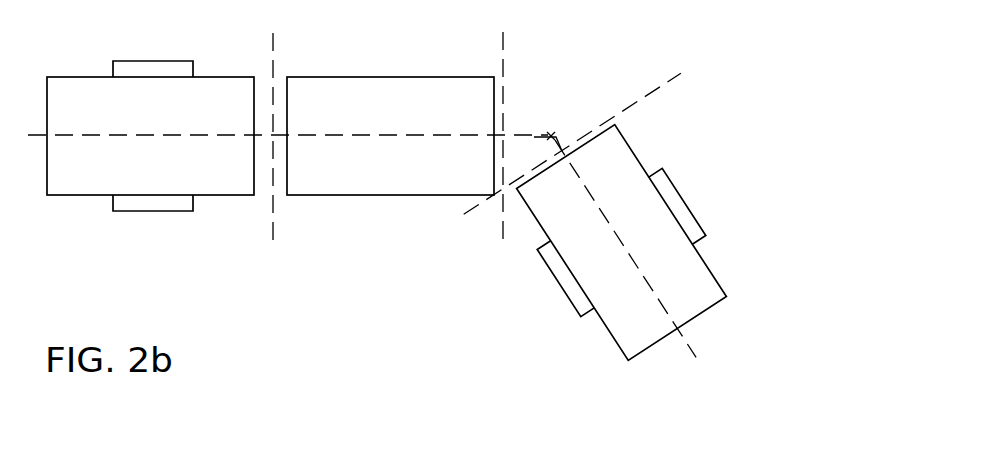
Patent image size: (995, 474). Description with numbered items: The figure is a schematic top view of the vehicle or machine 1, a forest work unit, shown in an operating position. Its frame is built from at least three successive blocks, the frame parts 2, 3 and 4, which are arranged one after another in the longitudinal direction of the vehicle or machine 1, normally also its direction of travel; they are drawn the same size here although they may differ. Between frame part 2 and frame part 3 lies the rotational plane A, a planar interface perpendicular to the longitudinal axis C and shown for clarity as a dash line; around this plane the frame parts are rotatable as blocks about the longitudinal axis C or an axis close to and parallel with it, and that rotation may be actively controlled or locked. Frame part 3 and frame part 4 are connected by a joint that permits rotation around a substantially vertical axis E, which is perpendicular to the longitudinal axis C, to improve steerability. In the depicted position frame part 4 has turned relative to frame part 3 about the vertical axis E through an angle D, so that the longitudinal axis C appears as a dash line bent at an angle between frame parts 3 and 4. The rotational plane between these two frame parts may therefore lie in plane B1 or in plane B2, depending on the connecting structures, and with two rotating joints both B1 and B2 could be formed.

The vehicle or machine 1 is at (745, 82).
The frame part 2 is at (150, 100).
The frame part 3 is at (412, 100).
The frame part 4 is at (652, 225).
The rotational plane A is at (273, 124).
The rotational plane B1 is at (506, 123).
The rotational plane B2 is at (572, 143).
The longitudinal axis C is at (625, 248).
The angle D is at (558, 150).
The vertical axis E is at (556, 137).